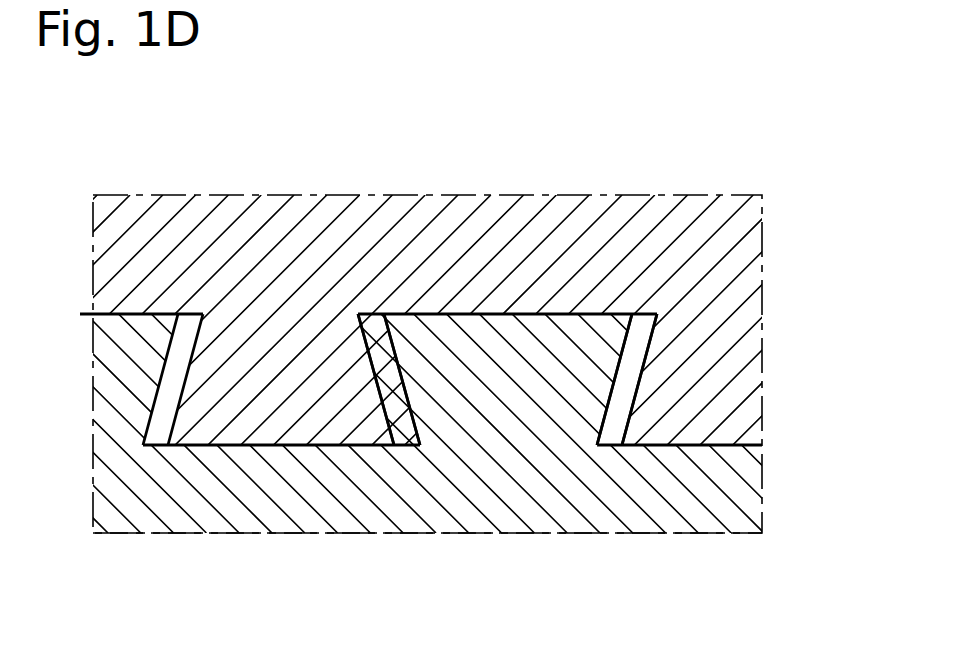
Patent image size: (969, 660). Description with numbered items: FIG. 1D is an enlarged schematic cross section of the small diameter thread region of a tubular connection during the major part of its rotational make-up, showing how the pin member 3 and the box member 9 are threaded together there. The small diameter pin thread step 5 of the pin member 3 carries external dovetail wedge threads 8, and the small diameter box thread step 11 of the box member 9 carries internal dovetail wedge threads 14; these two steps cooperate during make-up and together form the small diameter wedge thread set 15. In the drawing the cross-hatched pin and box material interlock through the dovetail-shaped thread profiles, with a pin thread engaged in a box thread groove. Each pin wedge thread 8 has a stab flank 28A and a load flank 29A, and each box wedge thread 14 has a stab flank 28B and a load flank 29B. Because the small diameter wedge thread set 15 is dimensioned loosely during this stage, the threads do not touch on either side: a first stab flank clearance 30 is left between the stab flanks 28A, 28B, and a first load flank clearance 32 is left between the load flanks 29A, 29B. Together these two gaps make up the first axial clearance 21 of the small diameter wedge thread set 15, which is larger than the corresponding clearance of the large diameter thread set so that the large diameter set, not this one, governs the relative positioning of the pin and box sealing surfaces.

The box member 9 is at (197, 193).
The pin member 3 is at (358, 535).
The internal dovetail wedge threads 14 is at (228, 413).
The first axial clearance 21 is at (463, 477).
The small diameter box thread step 11 is at (313, 447).
The small diameter pin thread step 5 is at (512, 311).
The small diameter wedge thread set 15 is at (415, 468).
The external dovetail wedge threads 8 is at (486, 362).
The first stab flank clearance 30 is at (375, 338).
The stab flank 28A is at (397, 370).
The stab flank 28B is at (383, 397).
The first load flank clearance 32 is at (641, 327).
The load flank 29A is at (617, 388).
The load flank 29B is at (640, 360).